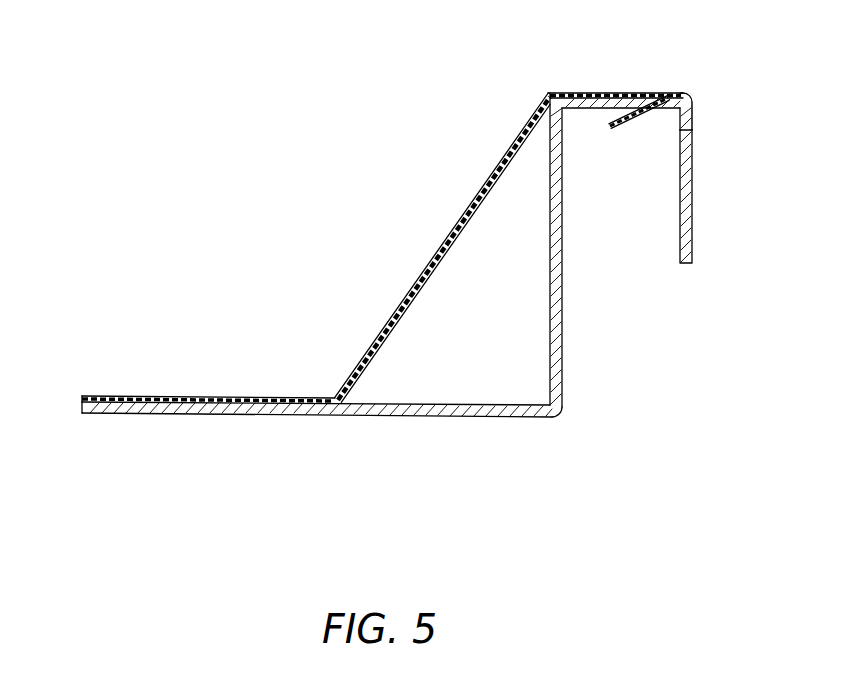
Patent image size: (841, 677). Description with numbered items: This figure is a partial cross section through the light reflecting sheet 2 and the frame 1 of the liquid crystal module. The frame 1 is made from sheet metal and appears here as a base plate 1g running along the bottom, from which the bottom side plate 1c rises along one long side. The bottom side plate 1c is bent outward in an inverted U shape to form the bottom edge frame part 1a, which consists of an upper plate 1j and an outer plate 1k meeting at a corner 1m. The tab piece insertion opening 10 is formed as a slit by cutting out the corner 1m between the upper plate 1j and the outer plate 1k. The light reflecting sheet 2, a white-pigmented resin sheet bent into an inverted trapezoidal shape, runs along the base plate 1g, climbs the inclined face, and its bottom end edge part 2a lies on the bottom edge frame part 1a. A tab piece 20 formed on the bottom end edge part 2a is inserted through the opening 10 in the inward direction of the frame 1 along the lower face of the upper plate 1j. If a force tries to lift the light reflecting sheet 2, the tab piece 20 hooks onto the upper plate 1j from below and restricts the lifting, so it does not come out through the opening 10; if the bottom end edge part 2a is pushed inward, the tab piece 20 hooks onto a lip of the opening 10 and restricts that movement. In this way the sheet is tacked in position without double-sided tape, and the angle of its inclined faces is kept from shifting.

The frame 1 is at (427, 261).
The base plate 1g is at (442, 417).
The bottom side plate 1c is at (563, 313).
The bottom edge frame part 1a is at (616, 66).
The upper plate 1j is at (610, 90).
The corner 1m is at (693, 95).
The outer plate 1k is at (693, 200).
The tab piece insertion opening 10 is at (695, 118).
The light reflecting sheet 2 is at (402, 303).
The bottom end edge part 2a is at (672, 87).
The tab piece 20 is at (627, 121).